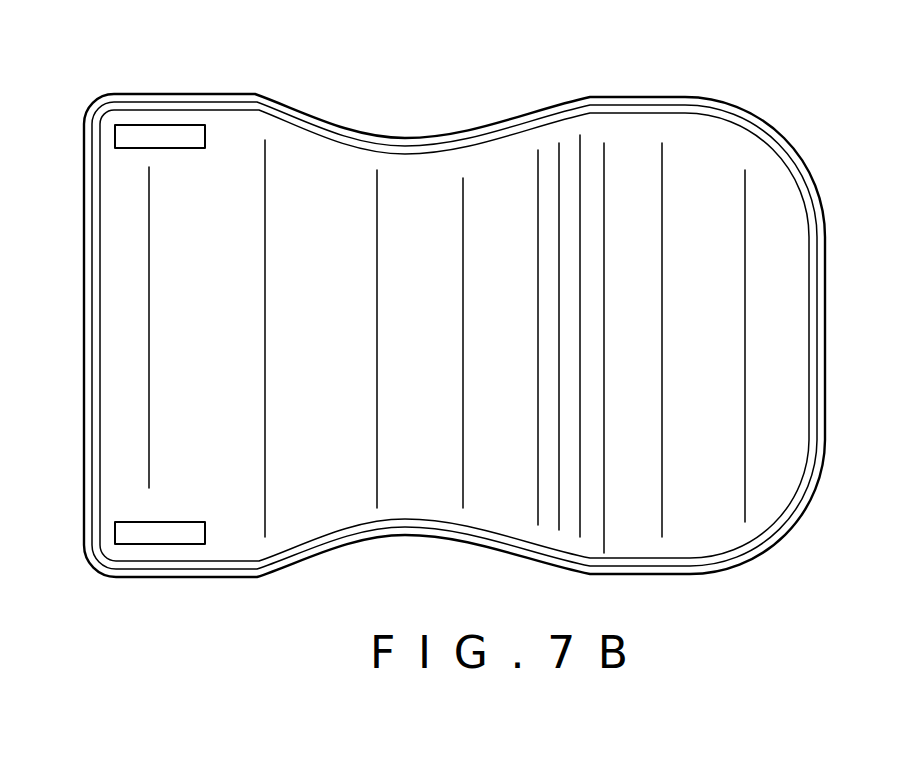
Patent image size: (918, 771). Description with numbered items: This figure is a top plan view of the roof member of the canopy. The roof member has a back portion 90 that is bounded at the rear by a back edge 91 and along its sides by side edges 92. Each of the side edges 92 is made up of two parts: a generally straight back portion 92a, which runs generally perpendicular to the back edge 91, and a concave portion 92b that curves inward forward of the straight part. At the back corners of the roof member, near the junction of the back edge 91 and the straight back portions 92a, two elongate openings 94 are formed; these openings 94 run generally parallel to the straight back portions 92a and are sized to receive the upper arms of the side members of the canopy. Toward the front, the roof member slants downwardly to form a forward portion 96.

The back portion 90 is at (215, 338).
The back edge 91 is at (83, 382).
The side edges 92 is at (268, 92).
The straight back portion 92a is at (164, 93).
The concave portion 92b is at (413, 137).
The elongate openings 94 is at (130, 137).
The forward portion 96 is at (720, 343).